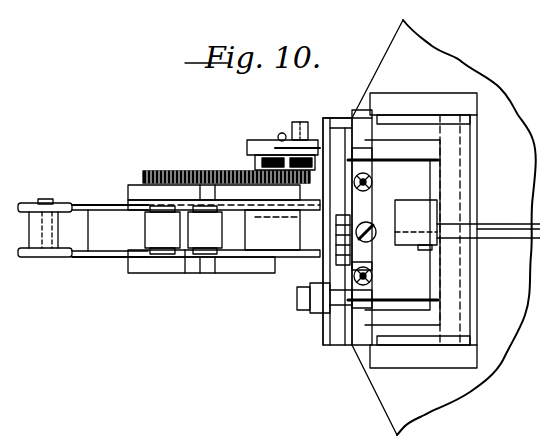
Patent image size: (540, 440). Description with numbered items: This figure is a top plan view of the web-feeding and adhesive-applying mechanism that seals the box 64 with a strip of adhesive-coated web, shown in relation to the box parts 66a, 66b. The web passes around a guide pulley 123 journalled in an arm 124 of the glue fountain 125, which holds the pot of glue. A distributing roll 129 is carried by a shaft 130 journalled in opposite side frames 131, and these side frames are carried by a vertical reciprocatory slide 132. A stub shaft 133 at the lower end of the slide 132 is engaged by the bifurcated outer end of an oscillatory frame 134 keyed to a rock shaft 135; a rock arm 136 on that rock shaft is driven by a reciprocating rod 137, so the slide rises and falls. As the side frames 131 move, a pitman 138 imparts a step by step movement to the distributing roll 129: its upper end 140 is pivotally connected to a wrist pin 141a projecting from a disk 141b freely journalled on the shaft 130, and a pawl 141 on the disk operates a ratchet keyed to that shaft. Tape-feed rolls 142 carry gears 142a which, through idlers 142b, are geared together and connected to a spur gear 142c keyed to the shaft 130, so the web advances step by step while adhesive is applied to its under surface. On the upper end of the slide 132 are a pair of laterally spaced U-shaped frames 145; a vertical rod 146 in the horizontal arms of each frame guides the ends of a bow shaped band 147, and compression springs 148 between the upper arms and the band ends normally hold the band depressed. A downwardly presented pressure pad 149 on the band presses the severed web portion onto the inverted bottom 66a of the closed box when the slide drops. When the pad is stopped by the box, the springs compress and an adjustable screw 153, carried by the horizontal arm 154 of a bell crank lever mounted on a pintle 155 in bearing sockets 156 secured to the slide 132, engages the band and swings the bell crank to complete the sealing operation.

The machine frame (broken away) 64 is at (465, 76).
The inverted bottom 66a is at (420, 170).
The outer bracket arm 66b is at (422, 158).
The guide pulley 123 is at (58, 246).
The arm 124 is at (93, 205).
The glue fountain 125 is at (256, 273).
The distributing roll 129 is at (212, 273).
The shaft 130 is at (270, 240).
The side frames 131 is at (137, 186).
The slide 132 is at (325, 312).
The stub shaft 133 is at (362, 112).
The oscillatory frame 134 is at (410, 113).
The rock shaft 135 is at (463, 325).
The rock arm 136 is at (420, 200).
The reciprocating rod 137 is at (516, 233).
The pitman 138 is at (293, 125).
The upper end 140 is at (324, 118).
The pawl 141 is at (252, 165).
The wrist pin 141a is at (276, 140).
The disk 141b is at (262, 150).
The tape-feed rolls 142 is at (162, 242).
The gears 142a is at (186, 181).
The idlers 142b is at (190, 184).
The spur gear 142c is at (262, 193).
The U-shaped frames 145 is at (373, 183).
The vertical rod 146 is at (370, 181).
The bow shaped band 147 is at (373, 266).
The compression springs 148 is at (380, 301).
The pressure pad 149 is at (377, 237).
The adjustable screw 153 is at (335, 250).
The horizontal arm 154 is at (438, 246).
The pintle 155 is at (300, 300).
The bearing sockets 156 is at (330, 258).